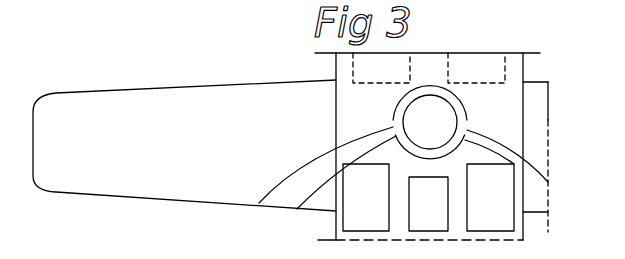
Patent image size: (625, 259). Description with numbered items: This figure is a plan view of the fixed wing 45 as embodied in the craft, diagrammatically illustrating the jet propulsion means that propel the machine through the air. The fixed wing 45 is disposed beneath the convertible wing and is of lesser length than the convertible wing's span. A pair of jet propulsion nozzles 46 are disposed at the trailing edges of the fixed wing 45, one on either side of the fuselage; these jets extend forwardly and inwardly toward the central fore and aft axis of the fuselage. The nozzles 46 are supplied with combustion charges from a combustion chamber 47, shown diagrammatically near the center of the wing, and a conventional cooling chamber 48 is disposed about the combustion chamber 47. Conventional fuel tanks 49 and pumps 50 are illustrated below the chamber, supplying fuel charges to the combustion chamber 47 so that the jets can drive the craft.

The fixed wing 45 is at (252, 72).
The jet propulsion nozzles 46 is at (289, 199).
The combustion chamber 47 is at (414, 113).
The cooling chamber 48 is at (460, 119).
The fuel tanks 49 is at (378, 222).
The pumps 50 is at (437, 224).